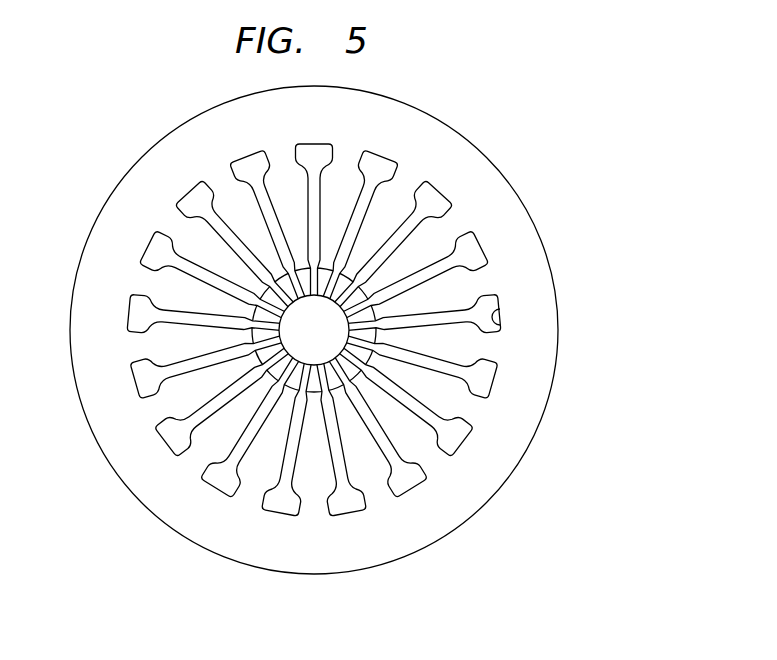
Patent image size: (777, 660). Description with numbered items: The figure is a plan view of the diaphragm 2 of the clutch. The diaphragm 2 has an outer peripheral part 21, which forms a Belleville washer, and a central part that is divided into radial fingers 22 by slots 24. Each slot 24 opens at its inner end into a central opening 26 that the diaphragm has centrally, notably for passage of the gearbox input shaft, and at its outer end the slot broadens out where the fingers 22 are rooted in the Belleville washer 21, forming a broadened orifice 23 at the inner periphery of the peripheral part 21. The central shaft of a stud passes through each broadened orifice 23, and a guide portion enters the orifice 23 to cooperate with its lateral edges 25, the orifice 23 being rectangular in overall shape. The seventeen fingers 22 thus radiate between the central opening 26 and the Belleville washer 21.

The diaphragm 2 is at (365, 309).
The peripheral part 21 is at (542, 228).
The radial fingers 22 is at (445, 232).
The broadened orifices 23 is at (493, 322).
The slots 24 is at (363, 207).
The lateral edges 25 is at (445, 210).
The central opening 26 is at (310, 366).